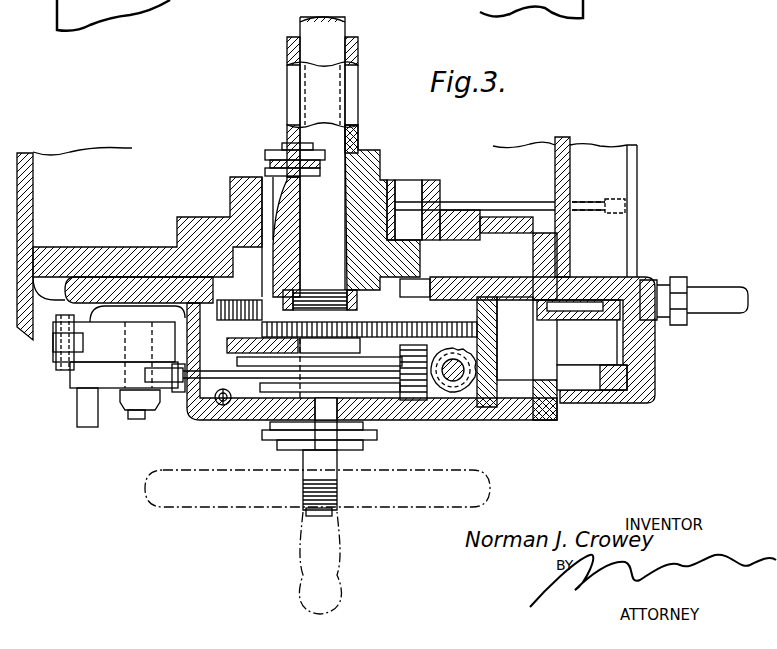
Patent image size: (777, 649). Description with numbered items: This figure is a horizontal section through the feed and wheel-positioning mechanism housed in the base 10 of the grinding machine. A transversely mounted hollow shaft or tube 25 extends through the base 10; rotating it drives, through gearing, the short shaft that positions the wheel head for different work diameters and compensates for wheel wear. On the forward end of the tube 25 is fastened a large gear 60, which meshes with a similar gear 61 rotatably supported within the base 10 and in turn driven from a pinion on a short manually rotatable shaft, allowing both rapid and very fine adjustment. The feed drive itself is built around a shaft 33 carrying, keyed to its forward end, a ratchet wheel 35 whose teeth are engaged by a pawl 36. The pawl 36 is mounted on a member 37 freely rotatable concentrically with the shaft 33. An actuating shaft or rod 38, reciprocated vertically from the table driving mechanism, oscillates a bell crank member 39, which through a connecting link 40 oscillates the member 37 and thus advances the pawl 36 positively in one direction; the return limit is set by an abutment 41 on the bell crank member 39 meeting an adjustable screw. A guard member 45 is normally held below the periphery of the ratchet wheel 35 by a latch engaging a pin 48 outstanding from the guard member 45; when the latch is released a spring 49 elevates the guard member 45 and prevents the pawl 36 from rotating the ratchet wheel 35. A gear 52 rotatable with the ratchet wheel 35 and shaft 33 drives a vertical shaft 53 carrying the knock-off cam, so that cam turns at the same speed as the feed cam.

The base 10 is at (33, 219).
The hollow shaft or tube 25 is at (360, 57).
The shaft 33 is at (315, 40).
The ratchet wheel 35 is at (128, 407).
The pawl 36 is at (387, 343).
The oscillating member 37 is at (262, 413).
The actuating shaft or rod 38 is at (68, 341).
The bell crank member 39 is at (105, 347).
The connecting link 40 is at (183, 393).
The abutment 41 is at (84, 413).
The guard member 45 is at (275, 432).
The pin 48 is at (318, 432).
The spring 49 is at (205, 409).
The gear 52 is at (242, 230).
The vertical shaft 53 is at (462, 362).
The large gear 60 is at (215, 300).
The gear 61 is at (603, 322).